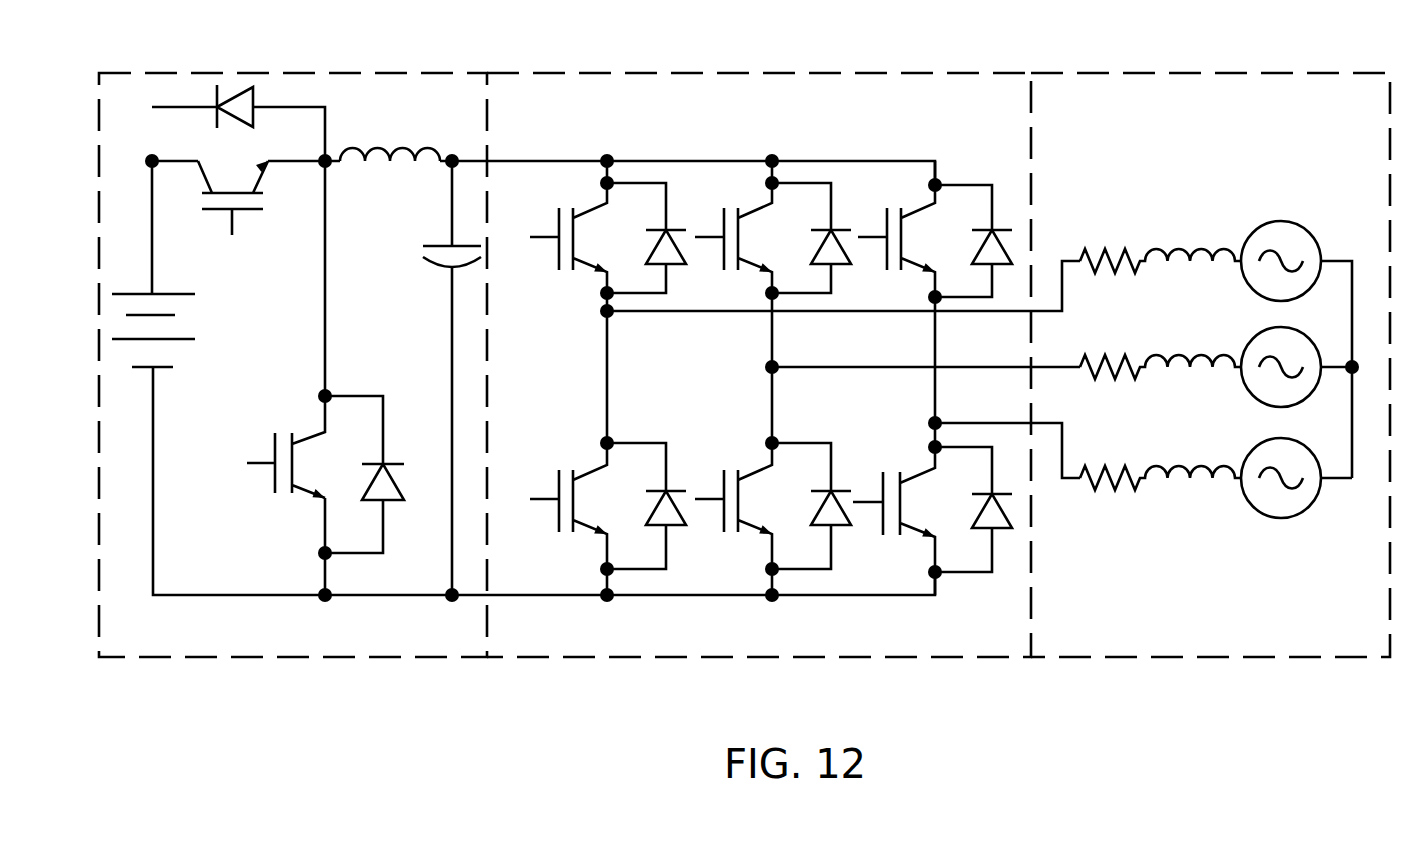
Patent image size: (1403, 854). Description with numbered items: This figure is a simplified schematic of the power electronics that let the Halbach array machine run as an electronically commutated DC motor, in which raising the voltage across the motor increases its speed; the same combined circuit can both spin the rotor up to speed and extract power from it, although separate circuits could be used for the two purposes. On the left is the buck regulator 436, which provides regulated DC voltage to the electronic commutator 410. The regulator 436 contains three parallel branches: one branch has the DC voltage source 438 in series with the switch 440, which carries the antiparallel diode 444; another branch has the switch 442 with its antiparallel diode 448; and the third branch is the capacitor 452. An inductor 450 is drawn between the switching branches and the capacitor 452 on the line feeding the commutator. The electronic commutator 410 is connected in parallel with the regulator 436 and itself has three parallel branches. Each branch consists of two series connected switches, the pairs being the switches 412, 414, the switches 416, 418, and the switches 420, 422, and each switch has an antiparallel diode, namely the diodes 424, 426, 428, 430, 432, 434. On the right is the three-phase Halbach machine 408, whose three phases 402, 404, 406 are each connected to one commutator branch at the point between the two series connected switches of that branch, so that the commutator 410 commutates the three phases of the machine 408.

The phase 402 is at (1342, 260).
The phase 404 is at (1345, 366).
The phase 406 is at (1340, 477).
The Halbach machine 408 is at (1247, 660).
The electronic commutator 410 is at (680, 661).
The switch 412 is at (592, 207).
The switch 414 is at (587, 472).
The switch 416 is at (757, 207).
The switch 418 is at (752, 472).
The switch 420 is at (915, 213).
The switch 422 is at (912, 532).
The antiparallel diode 424 is at (647, 245).
The antiparallel diode 426 is at (645, 513).
The antiparallel diode 428 is at (812, 245).
The antiparallel diode 430 is at (812, 513).
The antiparallel diode 432 is at (977, 253).
The antiparallel diode 434 is at (977, 515).
The buck regulator 436 is at (362, 660).
The DC voltage source 438 is at (185, 342).
The switch 440 is at (262, 172).
The switch 442 is at (305, 493).
The antiparallel diode 444 is at (240, 90).
The antiparallel diode 448 is at (383, 467).
The inductor 450 is at (398, 148).
The capacitor 452 is at (435, 243).